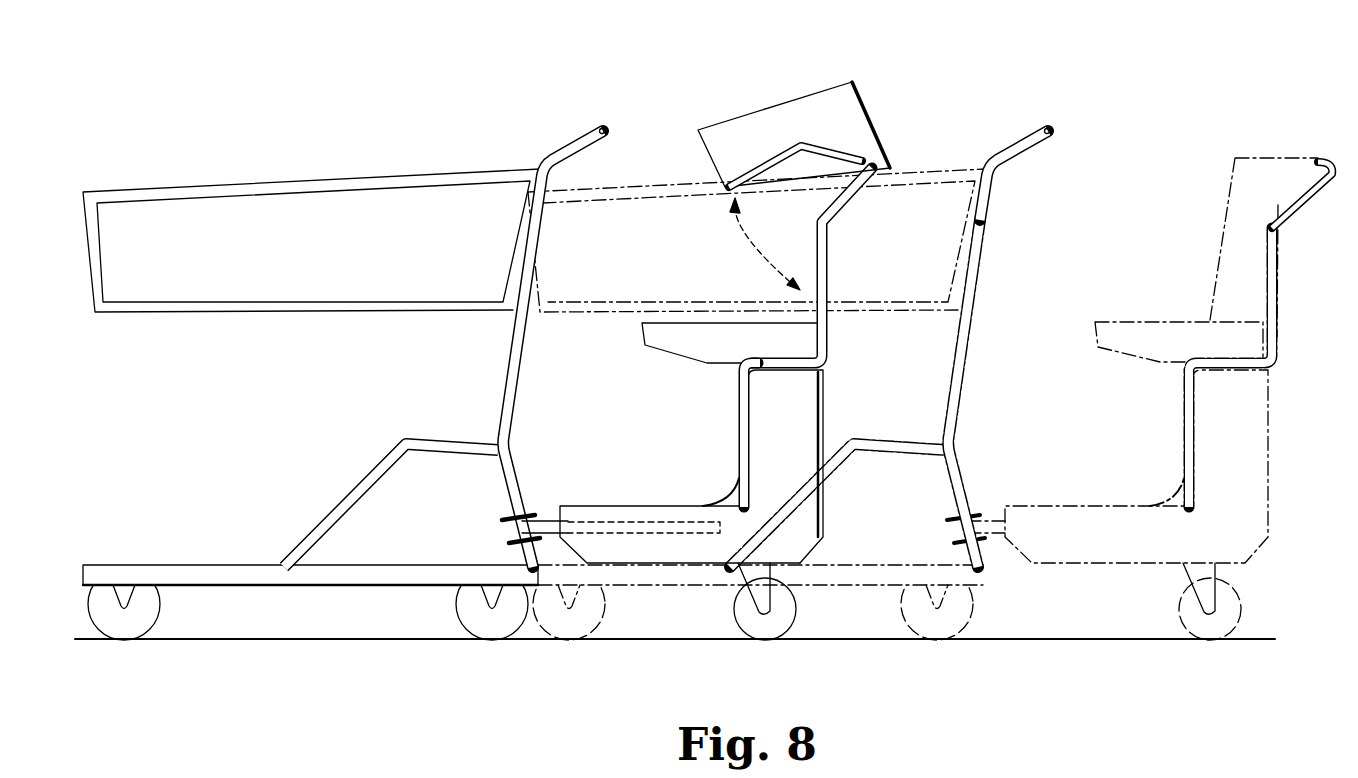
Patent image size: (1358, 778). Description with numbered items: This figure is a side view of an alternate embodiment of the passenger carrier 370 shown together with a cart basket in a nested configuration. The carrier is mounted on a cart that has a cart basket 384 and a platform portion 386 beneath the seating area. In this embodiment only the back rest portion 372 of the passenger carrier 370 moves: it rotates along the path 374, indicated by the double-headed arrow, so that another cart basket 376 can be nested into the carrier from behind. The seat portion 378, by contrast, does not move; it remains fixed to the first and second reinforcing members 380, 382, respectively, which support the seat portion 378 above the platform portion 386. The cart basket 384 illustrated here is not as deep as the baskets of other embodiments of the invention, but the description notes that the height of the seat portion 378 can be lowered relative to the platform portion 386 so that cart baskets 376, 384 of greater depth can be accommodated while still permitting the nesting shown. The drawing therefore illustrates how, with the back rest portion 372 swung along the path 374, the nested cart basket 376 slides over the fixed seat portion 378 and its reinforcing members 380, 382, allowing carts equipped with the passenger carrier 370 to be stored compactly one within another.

The passenger carrier 370 is at (866, 100).
The back rest portion 372 is at (776, 107).
The path 374 is at (750, 240).
The cart basket 376 is at (950, 165).
The seat portion 378 is at (683, 350).
The first reinforcing member 380 is at (740, 432).
The second reinforcing member 382 is at (803, 407).
The cart basket 384 is at (311, 205).
The platform portion 386 is at (656, 504).